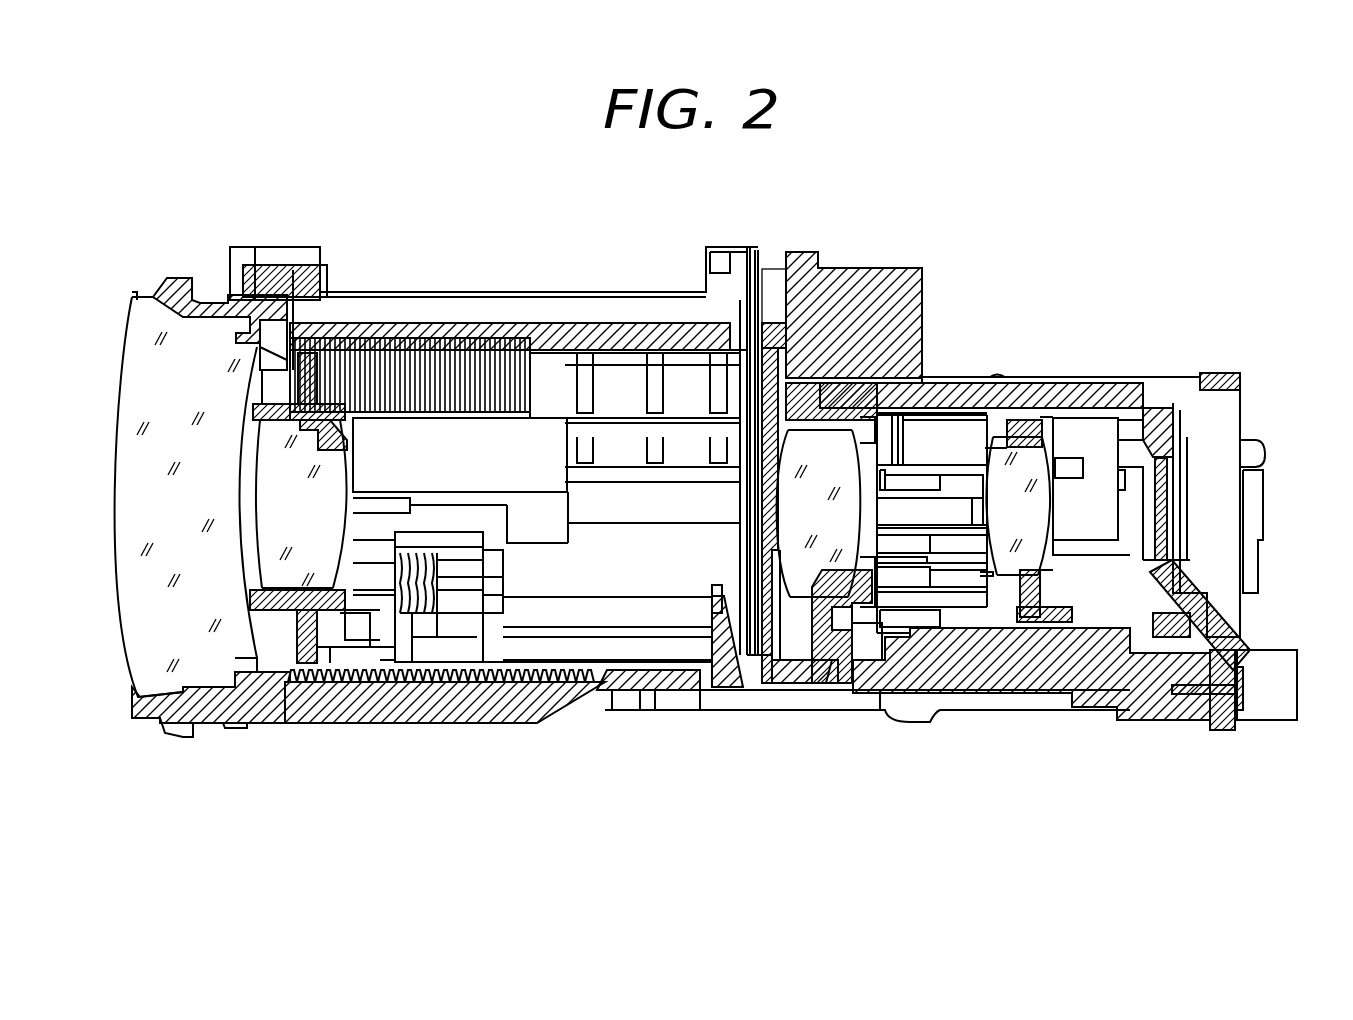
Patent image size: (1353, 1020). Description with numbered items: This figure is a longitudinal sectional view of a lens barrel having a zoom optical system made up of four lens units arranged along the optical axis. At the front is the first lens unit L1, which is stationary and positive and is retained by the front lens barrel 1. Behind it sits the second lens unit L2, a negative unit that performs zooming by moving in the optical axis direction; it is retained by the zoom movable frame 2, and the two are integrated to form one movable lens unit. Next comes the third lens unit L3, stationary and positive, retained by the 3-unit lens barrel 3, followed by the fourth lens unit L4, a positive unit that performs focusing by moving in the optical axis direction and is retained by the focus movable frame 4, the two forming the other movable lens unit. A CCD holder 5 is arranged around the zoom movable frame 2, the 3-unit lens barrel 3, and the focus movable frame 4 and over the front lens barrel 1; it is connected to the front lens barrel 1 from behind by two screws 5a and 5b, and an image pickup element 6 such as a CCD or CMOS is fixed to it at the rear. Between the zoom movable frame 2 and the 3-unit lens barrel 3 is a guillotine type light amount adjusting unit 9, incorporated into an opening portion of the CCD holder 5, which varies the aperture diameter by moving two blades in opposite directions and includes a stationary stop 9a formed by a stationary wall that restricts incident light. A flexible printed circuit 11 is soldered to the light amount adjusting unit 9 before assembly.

The front lens barrel 1 is at (584, 690).
The zoom movable frame 2 is at (305, 640).
The 3-unit lens barrel 3 is at (815, 640).
The focus movable frame 4 is at (1045, 615).
The CCD holder 5 is at (1090, 384).
The screw 5a is at (320, 270).
The screw 5b is at (1245, 693).
The image pickup element 6 is at (1165, 503).
The light amount adjusting unit 9 is at (886, 268).
The stationary stop 9a is at (760, 412).
The flexible printed circuit 11 is at (925, 297).
The first lens unit L1 is at (125, 515).
The second lens unit L2 is at (277, 575).
The third lens unit L3 is at (807, 580).
The fourth lens unit L4 is at (1000, 570).